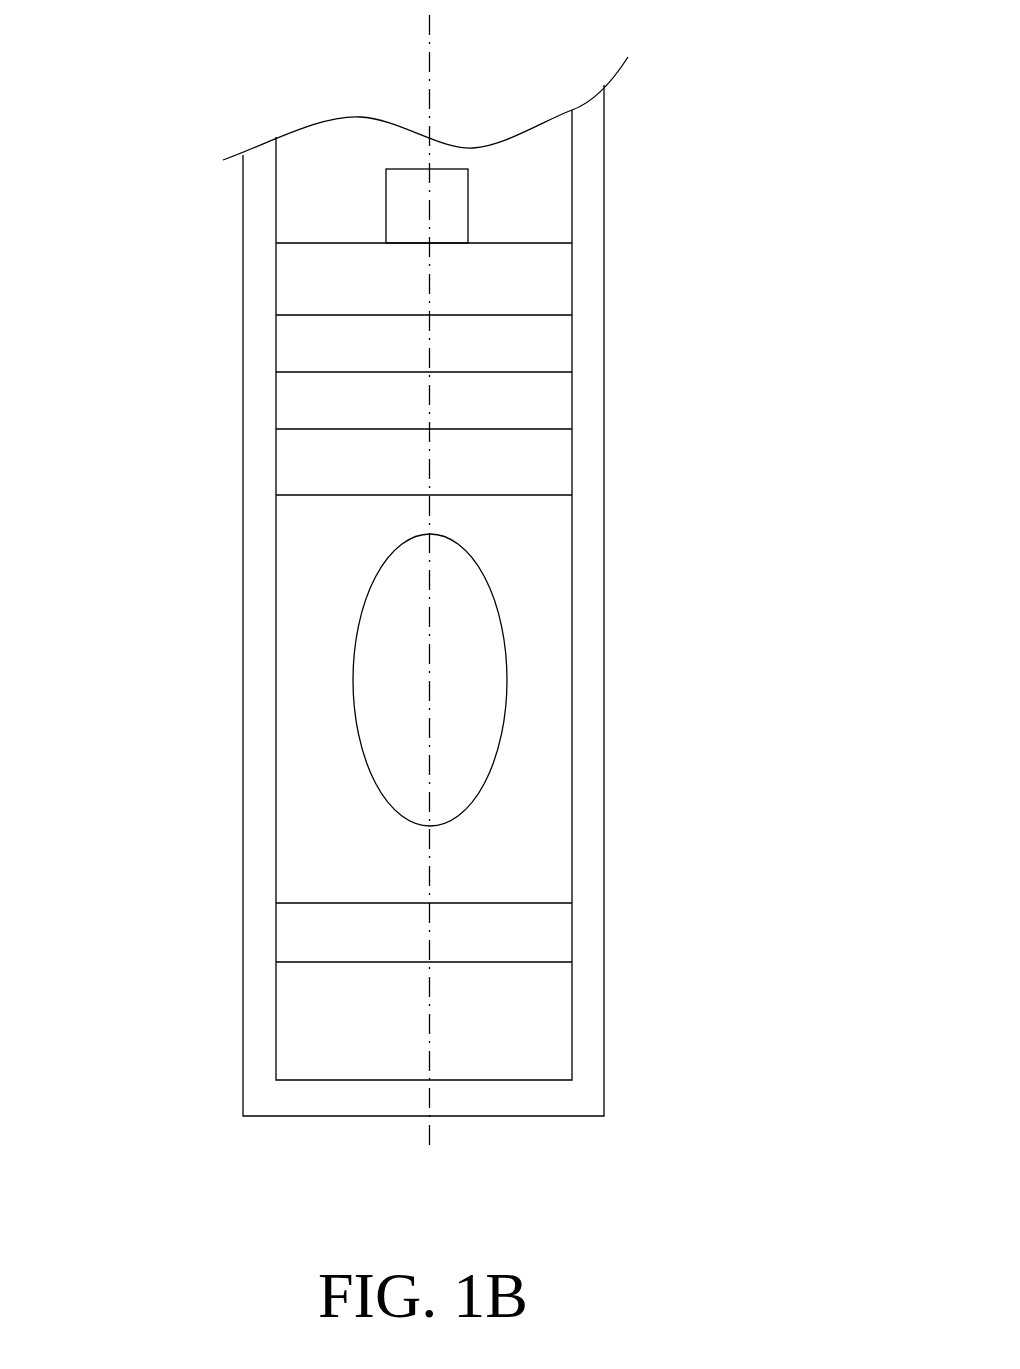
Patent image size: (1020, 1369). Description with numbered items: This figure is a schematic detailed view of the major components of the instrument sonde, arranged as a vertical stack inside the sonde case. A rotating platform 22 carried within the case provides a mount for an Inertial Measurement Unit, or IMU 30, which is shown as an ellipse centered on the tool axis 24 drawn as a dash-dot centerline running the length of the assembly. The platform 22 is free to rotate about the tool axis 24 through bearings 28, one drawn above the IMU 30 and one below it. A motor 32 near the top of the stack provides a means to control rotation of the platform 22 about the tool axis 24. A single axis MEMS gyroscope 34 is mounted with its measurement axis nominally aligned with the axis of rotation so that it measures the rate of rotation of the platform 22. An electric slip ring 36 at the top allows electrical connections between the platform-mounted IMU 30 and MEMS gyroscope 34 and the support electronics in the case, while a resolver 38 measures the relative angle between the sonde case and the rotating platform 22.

The rotating platform 22 is at (303, 715).
The tool axis 24 is at (432, 33).
The bearings 28 is at (555, 338).
The inertial measurement unit (IMU) 30 is at (382, 625).
The motor 32 is at (548, 282).
The single axis MEMS gyroscope 34 is at (548, 455).
The electric slip ring 36 is at (469, 200).
The resolver 38 is at (553, 397).